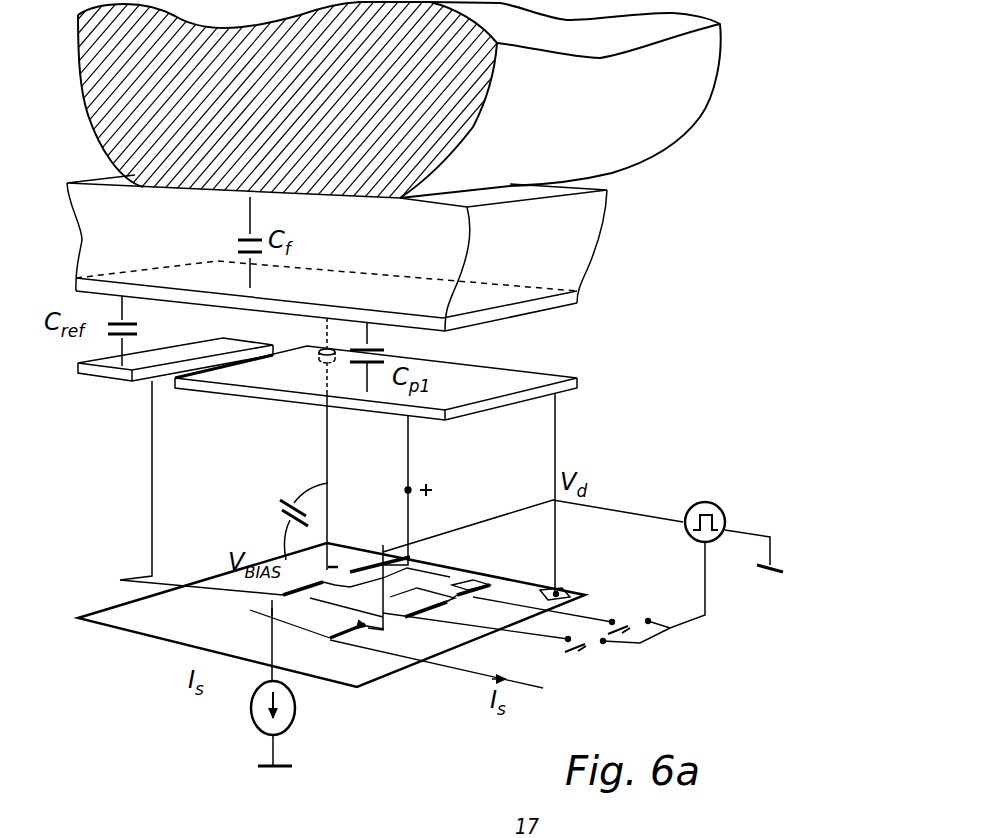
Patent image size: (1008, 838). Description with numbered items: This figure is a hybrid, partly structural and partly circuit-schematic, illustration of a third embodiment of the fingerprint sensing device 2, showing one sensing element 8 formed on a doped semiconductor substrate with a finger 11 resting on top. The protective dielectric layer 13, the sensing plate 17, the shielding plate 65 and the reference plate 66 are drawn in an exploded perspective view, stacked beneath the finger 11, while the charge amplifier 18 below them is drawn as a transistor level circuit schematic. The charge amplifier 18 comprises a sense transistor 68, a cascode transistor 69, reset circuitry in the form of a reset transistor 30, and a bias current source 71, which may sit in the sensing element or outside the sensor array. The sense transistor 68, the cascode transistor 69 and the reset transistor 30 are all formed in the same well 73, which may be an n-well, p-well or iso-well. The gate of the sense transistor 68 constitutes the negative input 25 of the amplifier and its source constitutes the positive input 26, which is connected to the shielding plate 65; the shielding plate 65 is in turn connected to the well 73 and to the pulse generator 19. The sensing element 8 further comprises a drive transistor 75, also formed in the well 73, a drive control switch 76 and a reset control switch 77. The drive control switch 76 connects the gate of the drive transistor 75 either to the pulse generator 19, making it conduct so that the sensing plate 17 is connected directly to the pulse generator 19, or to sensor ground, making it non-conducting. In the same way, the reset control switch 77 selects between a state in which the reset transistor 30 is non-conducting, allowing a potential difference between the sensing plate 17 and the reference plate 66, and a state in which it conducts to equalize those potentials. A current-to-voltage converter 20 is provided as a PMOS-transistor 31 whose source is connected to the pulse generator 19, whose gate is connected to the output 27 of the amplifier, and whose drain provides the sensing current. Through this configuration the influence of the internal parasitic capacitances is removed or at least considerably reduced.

The fingerprint sensing system 2 is at (702, 256).
The sensing element 8 is at (135, 211).
The finger 11 is at (353, 121).
The protective dielectric layer 13 is at (444, 253).
The sensing plate 17 is at (500, 296).
The charge amplifier 18 is at (165, 676).
The pulse generator 19 is at (722, 512).
The current-to-voltage converter 20 is at (320, 657).
The negative input 25 is at (347, 563).
The positive input 26 is at (409, 492).
The output of the amplifier 27 is at (271, 615).
The reset transistor 30 is at (430, 628).
The PMOS-transistor 31 is at (364, 626).
The shielding plate 65 is at (543, 379).
The reference plate 66 is at (118, 377).
The sense transistor 68 is at (314, 559).
The cascode transistor 69 is at (265, 604).
The bias current source 71 is at (256, 730).
The well 73 is at (480, 633).
The drive transistor 75 is at (507, 571).
The drive control switch 76 is at (633, 605).
The reset control switch 77 is at (612, 662).